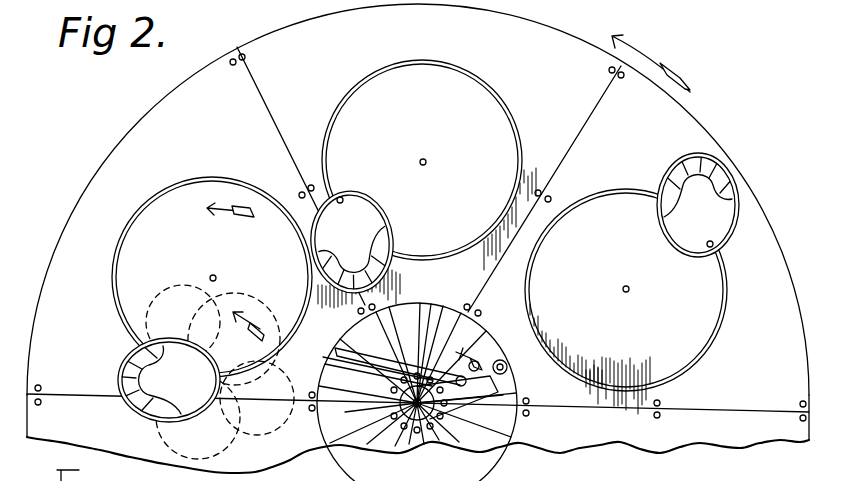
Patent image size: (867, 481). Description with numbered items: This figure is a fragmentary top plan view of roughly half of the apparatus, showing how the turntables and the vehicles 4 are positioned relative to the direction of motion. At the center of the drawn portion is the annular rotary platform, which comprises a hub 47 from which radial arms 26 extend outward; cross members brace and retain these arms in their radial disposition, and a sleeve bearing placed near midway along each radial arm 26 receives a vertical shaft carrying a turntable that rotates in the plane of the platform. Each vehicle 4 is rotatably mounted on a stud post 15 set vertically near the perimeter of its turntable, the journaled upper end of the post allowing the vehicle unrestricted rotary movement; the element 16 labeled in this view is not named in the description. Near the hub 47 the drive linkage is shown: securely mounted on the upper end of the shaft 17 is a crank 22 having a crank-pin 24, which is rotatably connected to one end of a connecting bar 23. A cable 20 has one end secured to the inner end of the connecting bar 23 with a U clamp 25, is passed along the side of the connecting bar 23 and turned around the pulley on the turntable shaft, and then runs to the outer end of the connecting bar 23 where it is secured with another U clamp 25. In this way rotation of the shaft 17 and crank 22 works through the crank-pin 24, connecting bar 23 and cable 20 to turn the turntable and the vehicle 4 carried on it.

The vehicle 4 is at (375, 230).
The stud post 15 is at (342, 198).
The drum 16 is at (480, 102).
The shaft 17 is at (426, 162).
The cable 20 is at (352, 338).
The crank 22 is at (493, 433).
The connecting bar 23 is at (348, 358).
The crank-pin 24 is at (530, 412).
The U clamp 25 is at (470, 362).
The radial arms 26 is at (350, 405).
The hub 47 is at (400, 433).